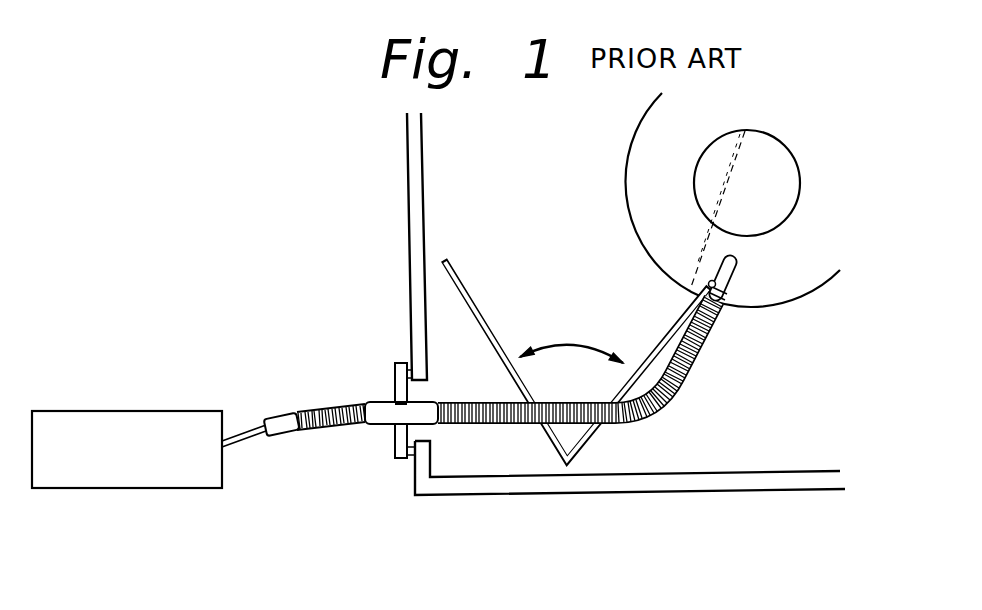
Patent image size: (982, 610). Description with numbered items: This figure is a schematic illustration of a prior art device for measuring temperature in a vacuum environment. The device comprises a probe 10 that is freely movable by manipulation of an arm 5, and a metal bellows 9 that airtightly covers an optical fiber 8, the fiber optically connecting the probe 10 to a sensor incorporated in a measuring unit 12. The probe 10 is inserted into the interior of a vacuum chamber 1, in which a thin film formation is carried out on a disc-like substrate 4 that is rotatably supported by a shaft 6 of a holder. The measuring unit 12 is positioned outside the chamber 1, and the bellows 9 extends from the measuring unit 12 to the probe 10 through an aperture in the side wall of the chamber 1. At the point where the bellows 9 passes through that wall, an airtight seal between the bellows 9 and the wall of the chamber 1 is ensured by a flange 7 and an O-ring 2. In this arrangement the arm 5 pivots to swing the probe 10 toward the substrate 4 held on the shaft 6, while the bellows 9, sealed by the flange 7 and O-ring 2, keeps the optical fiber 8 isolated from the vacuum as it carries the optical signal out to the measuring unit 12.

The vacuum chamber 1 is at (408, 128).
The O-ring 2 is at (410, 456).
The disc-like substrate 4 is at (632, 140).
The arm 5 is at (588, 436).
The shaft 6 is at (768, 155).
The flange 7 is at (395, 373).
The optical fiber 8 is at (262, 436).
The metal bellows 9 is at (465, 401).
The probe 10 is at (740, 300).
The measuring unit 12 is at (130, 410).